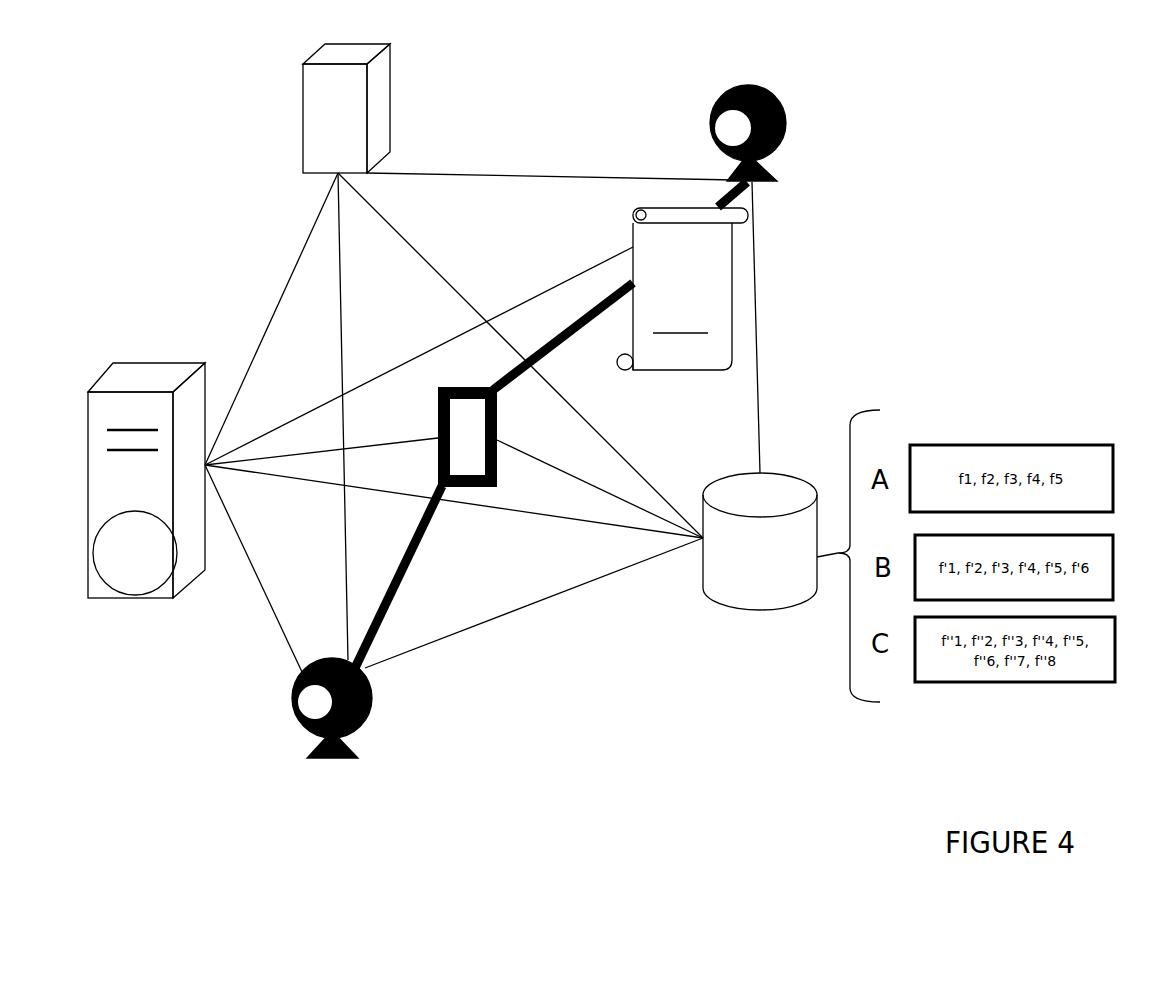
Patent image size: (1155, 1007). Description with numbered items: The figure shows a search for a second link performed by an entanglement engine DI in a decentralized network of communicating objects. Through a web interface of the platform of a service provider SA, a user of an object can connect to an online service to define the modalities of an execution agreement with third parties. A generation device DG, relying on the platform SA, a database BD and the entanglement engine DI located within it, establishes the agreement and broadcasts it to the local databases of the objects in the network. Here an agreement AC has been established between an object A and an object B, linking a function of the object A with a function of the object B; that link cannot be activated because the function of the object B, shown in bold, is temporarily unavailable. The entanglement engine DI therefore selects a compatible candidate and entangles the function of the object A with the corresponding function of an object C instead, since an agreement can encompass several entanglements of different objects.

The authentication server SA is at (346, 108).
The camera B is at (773, 133).
The access control list / certificate AC is at (733, 347).
The management device DG is at (146, 480).
The identification database DI is at (135, 553).
The device A is at (449, 437).
The database BD is at (760, 541).
The camera C is at (329, 715).